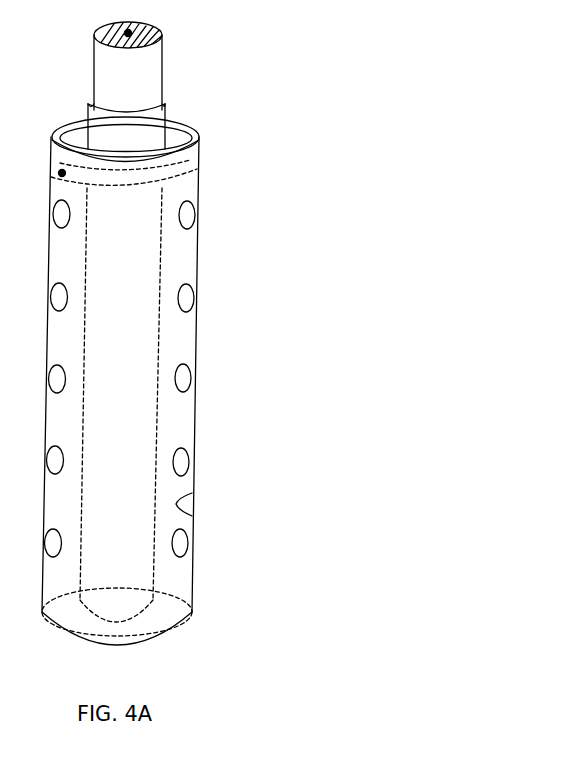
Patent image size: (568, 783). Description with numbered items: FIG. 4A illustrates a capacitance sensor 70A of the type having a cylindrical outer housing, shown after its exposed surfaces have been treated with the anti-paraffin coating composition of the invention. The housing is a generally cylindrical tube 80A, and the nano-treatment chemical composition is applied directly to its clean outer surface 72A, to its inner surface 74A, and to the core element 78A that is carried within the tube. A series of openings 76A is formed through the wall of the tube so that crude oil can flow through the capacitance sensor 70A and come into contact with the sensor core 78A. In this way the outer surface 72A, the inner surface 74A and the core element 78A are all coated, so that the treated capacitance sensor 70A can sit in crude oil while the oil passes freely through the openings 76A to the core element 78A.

The capacitance sensor 70A is at (173, 331).
The outer surface 72A is at (177, 425).
The inner surface 74A is at (192, 511).
The openings 76A is at (191, 372).
The core element 78A is at (162, 252).
The cylindrical tube 80A is at (196, 132).